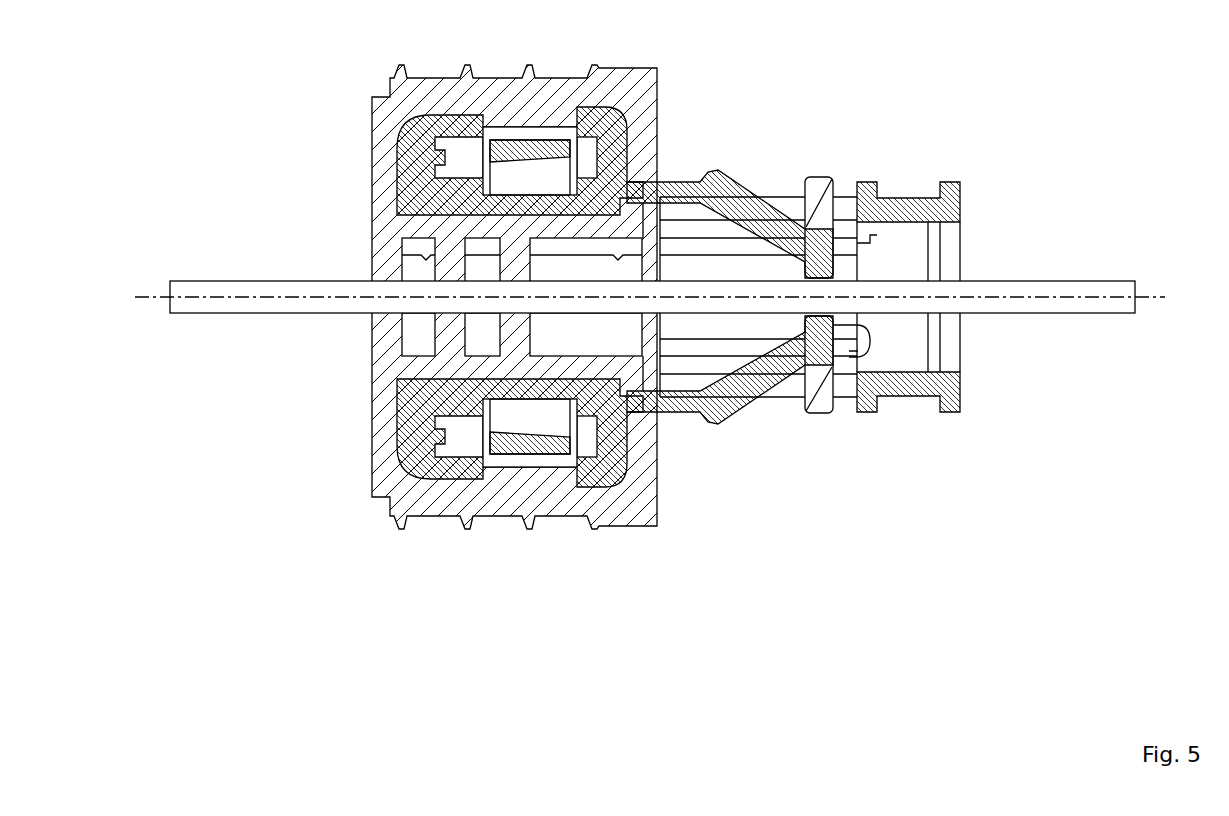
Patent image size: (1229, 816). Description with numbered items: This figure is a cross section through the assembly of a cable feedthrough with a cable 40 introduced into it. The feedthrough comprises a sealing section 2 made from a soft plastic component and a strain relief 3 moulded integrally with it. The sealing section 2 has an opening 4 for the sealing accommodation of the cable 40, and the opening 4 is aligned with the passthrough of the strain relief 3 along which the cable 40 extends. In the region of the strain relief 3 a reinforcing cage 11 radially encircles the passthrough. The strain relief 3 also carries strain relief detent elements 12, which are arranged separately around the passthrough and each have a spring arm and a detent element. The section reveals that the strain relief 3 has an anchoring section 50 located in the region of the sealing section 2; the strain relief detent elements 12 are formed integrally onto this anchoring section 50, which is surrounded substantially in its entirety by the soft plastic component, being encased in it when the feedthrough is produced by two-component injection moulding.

The sealing section 2 is at (557, 513).
The strain relief 3 is at (862, 412).
The opening 4 is at (412, 337).
The reinforcing cage 11 is at (912, 213).
The strain relief detent elements 12 is at (773, 213).
The cable 40 is at (1065, 305).
The anchoring section 50 is at (620, 407).